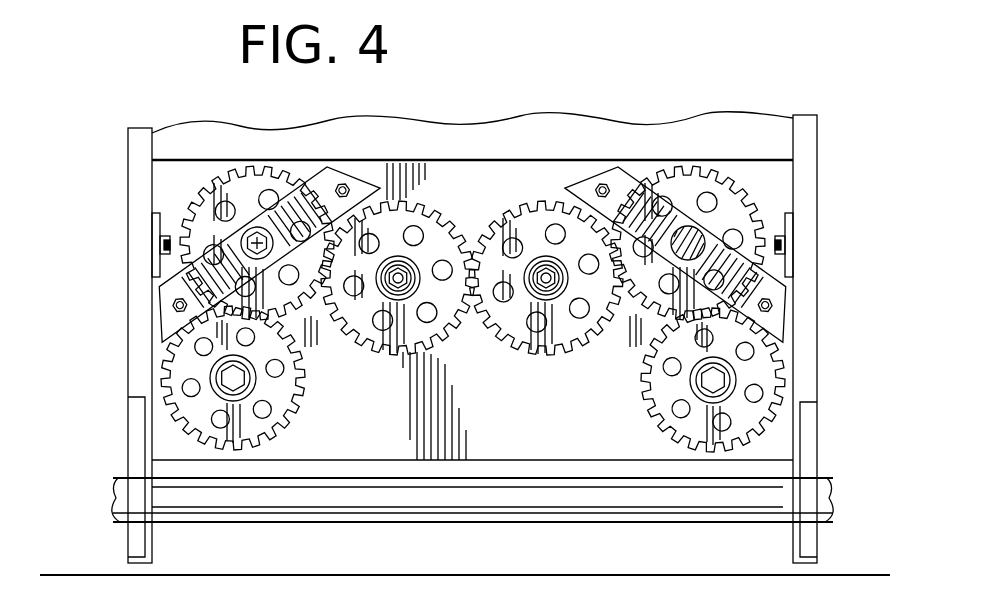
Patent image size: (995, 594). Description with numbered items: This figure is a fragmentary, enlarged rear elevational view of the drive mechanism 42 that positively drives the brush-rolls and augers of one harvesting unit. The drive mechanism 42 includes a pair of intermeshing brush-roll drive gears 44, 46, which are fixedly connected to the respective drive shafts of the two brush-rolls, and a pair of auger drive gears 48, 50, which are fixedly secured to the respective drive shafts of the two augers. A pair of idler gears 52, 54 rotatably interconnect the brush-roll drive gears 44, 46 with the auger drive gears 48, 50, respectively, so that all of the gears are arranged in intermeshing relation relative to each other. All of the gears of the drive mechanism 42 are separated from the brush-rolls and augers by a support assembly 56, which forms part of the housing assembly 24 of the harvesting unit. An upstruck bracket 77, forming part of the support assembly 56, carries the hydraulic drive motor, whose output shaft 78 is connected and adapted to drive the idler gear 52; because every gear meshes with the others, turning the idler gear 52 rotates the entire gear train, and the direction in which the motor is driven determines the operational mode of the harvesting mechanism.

The housing assembly 24 is at (122, 225).
The drive mechanism 42 is at (487, 185).
The brush-roll drive gear 44 is at (536, 355).
The brush-roll drive gear 46 is at (357, 333).
The auger drive gear 48 is at (758, 367).
The auger drive gear 50 is at (195, 368).
The idler gear 52 is at (740, 200).
The idler gear 54 is at (203, 220).
The support assembly 56 is at (517, 433).
The upstruck bracket 77 is at (637, 190).
The output shaft 78 is at (683, 257).